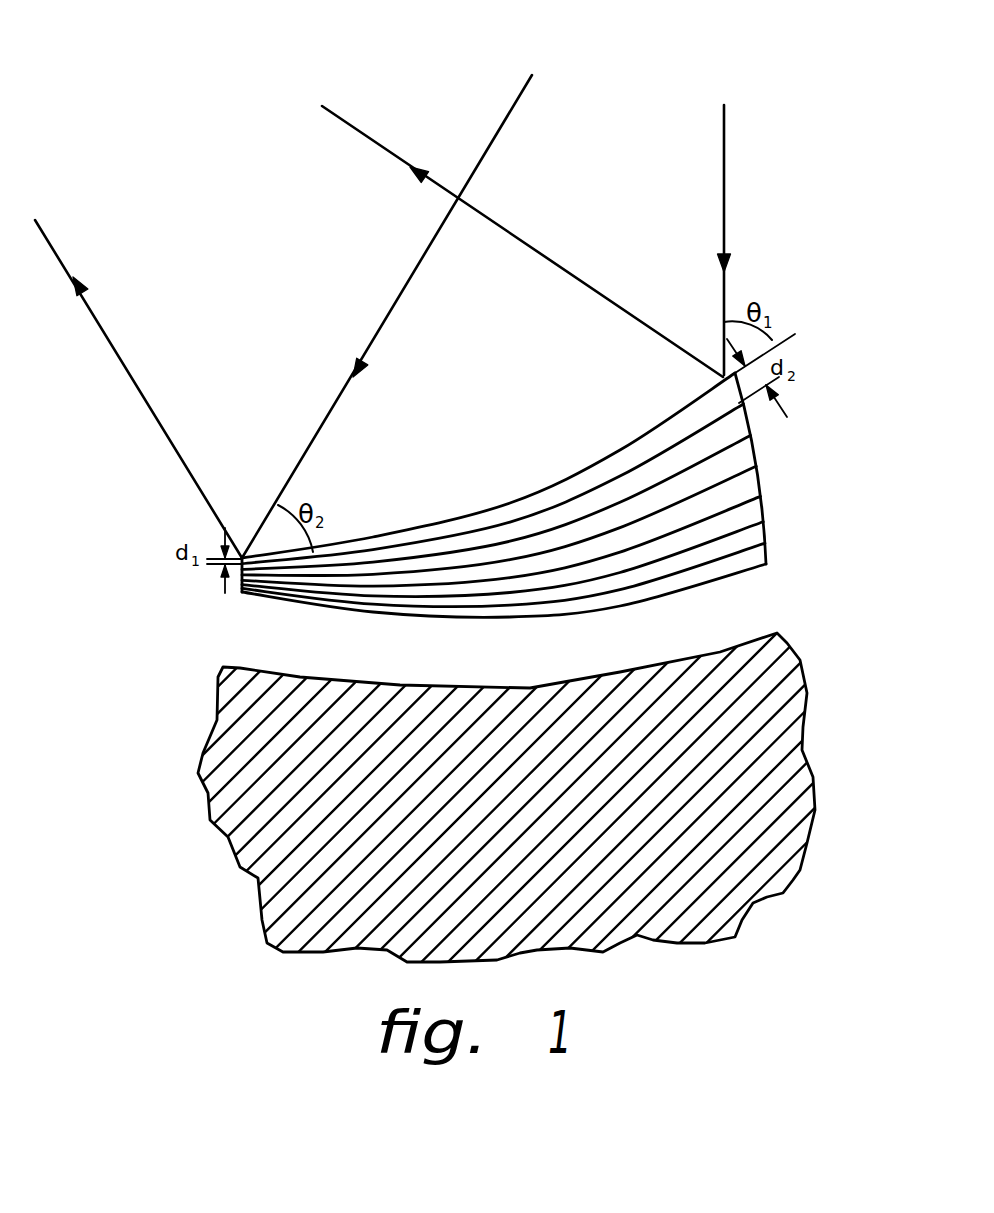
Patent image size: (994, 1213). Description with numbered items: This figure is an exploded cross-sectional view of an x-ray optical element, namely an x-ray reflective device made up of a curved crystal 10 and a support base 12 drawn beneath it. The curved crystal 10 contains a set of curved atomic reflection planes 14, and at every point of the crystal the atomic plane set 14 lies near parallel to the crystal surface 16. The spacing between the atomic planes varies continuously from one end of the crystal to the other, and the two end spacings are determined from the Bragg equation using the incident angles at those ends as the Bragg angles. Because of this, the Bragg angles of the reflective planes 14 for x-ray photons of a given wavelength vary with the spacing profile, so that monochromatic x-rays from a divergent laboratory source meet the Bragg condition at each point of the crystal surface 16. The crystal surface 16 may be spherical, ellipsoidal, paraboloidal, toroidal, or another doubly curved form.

The curved crystal 10 is at (557, 495).
The support base 12 is at (802, 750).
The curved atomic reflection planes 14 is at (717, 517).
The crystal surface 16 is at (494, 504).